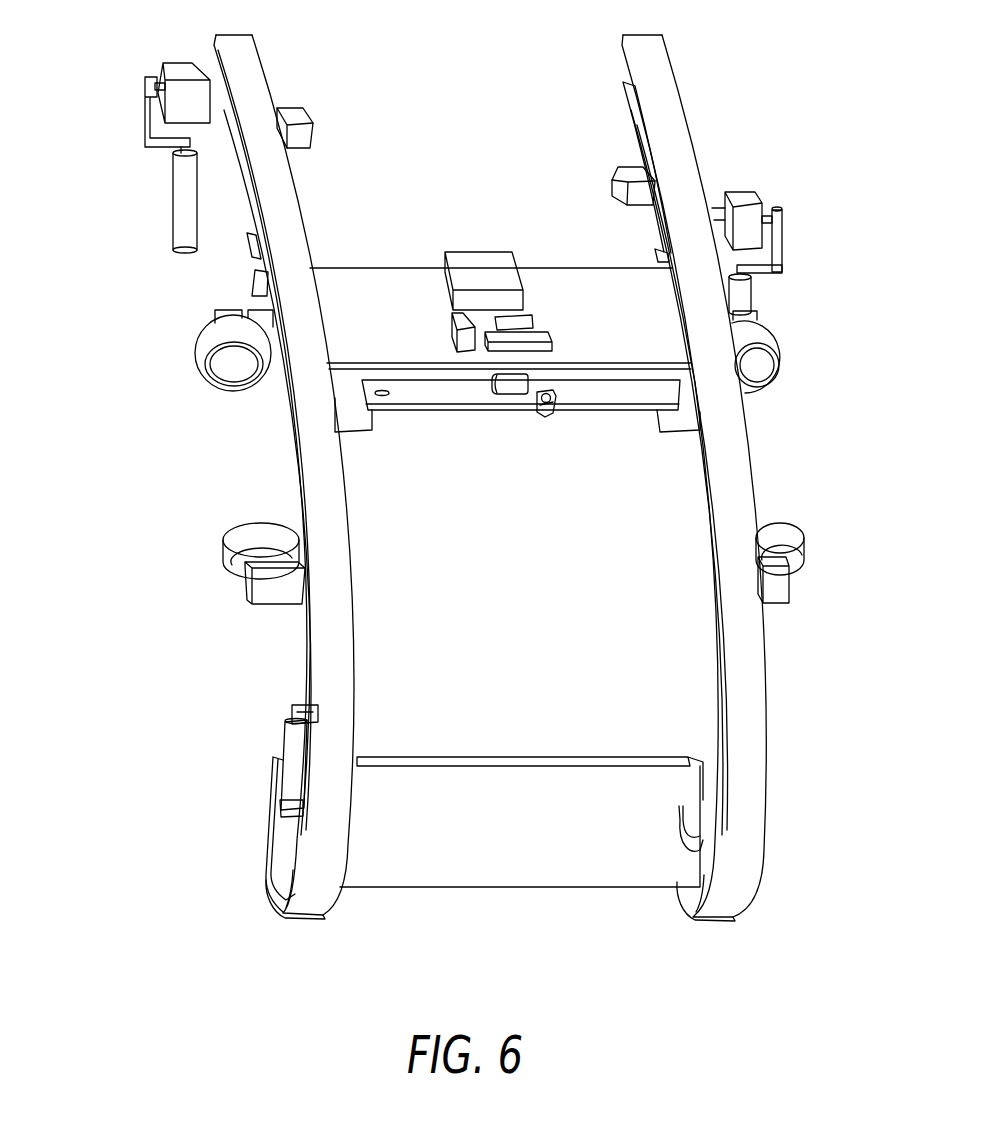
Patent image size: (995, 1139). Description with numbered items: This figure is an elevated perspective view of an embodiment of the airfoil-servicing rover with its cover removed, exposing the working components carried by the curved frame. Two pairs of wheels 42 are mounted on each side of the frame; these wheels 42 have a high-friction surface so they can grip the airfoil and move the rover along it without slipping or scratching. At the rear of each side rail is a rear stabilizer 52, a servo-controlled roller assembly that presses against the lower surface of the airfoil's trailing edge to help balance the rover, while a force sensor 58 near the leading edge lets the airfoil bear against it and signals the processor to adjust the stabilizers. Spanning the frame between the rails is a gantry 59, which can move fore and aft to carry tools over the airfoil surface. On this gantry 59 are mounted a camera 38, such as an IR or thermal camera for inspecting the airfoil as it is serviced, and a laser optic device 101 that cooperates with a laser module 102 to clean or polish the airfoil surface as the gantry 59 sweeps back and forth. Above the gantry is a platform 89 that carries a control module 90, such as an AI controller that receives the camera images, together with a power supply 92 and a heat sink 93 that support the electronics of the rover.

The camera 38 is at (514, 394).
The wheels 42 is at (235, 520).
The rear stabilizer 52 is at (183, 227).
The force sensor 58 is at (290, 742).
The gantry 59 is at (445, 395).
The platform 89 is at (369, 334).
The control module 90 is at (535, 320).
The power supply 92 is at (487, 267).
The heat sink 93 is at (450, 330).
The laser optic device 101 is at (550, 414).
The laser module 102 is at (553, 341).